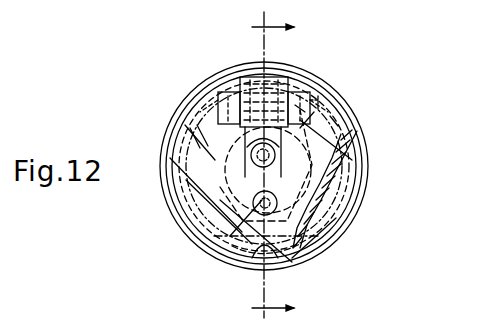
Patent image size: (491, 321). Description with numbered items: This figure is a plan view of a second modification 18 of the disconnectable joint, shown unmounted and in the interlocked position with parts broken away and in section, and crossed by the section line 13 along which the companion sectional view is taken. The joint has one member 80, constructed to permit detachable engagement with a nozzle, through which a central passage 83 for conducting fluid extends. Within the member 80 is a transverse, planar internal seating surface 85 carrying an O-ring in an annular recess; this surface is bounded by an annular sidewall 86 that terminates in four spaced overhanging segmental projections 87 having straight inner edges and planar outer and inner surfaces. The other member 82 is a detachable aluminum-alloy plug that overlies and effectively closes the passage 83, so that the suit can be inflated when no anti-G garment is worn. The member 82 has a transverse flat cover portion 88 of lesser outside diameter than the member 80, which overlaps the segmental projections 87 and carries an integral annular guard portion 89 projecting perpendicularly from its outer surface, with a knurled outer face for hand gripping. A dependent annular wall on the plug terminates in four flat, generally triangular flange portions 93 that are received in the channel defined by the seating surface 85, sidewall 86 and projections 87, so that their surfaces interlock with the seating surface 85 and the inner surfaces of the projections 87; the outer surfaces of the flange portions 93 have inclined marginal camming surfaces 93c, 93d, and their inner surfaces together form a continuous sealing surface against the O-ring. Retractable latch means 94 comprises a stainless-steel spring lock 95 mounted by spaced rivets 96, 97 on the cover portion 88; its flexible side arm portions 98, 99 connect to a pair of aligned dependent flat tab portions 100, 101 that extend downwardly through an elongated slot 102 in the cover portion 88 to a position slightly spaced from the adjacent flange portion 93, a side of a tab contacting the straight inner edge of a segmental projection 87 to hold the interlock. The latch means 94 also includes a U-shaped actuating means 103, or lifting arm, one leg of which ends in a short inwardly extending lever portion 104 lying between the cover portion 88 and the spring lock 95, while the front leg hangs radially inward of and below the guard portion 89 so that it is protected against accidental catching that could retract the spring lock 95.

The section line 13- 13 is at (257, 166).
The second modification of the disconnectable joint 18 is at (130, 121).
The one member 80 is at (346, 256).
The other member 82 is at (170, 214).
The central passage 83 is at (178, 203).
The internal seating surface 85 is at (343, 234).
The annular sidewall 86 is at (228, 272).
The segmental projections 87 is at (352, 161).
The cover portion 88 is at (350, 216).
The annular guard portion 89 is at (254, 72).
The flange portions 93 is at (350, 178).
The inclined marginal camming surface 93c is at (345, 145).
The inclined marginal camming surface 93d is at (192, 146).
The retractable latch means 94 is at (218, 120).
The spring lock 95 is at (202, 240).
The rivet 96 is at (284, 168).
The rivet 97 is at (226, 250).
The side arm portion 98 is at (335, 113).
The side arm portion 99 is at (226, 153).
The tab portion 100 is at (300, 96).
The tab portion 101 is at (230, 90).
The elongated slot 102 is at (346, 103).
The actuating means 103 is at (243, 94).
The lever portion 104 is at (334, 96).